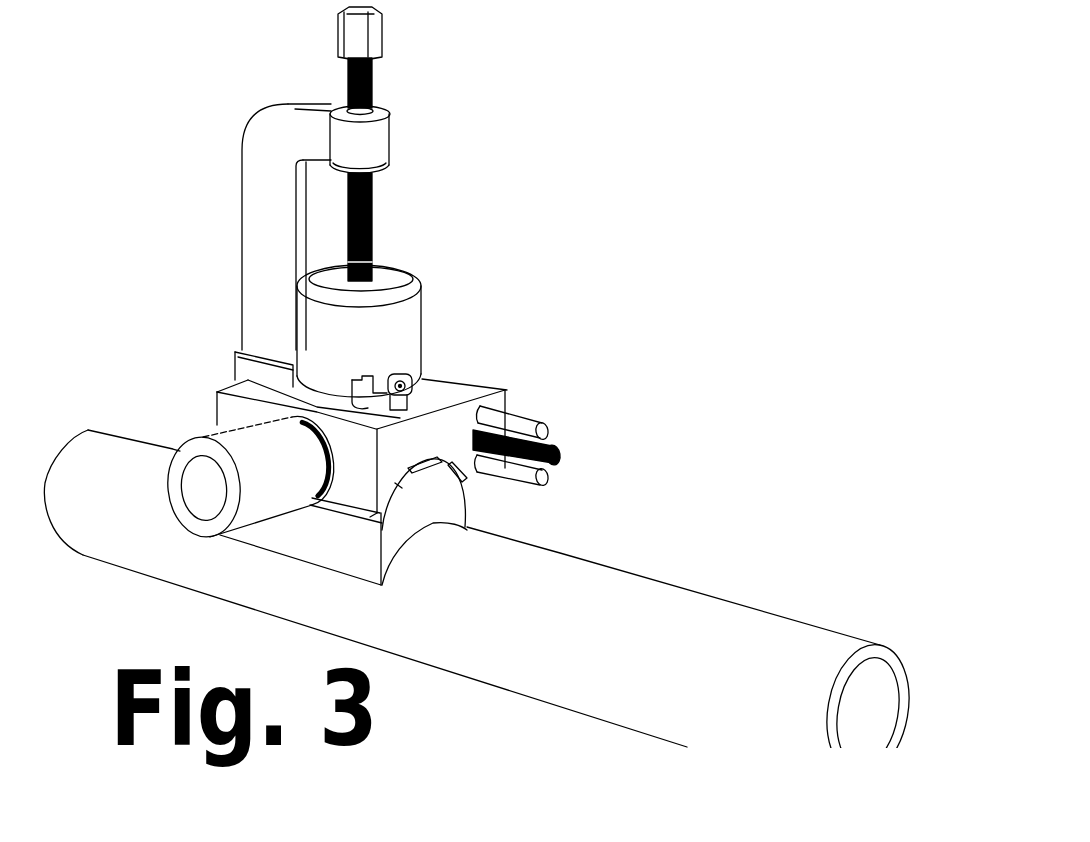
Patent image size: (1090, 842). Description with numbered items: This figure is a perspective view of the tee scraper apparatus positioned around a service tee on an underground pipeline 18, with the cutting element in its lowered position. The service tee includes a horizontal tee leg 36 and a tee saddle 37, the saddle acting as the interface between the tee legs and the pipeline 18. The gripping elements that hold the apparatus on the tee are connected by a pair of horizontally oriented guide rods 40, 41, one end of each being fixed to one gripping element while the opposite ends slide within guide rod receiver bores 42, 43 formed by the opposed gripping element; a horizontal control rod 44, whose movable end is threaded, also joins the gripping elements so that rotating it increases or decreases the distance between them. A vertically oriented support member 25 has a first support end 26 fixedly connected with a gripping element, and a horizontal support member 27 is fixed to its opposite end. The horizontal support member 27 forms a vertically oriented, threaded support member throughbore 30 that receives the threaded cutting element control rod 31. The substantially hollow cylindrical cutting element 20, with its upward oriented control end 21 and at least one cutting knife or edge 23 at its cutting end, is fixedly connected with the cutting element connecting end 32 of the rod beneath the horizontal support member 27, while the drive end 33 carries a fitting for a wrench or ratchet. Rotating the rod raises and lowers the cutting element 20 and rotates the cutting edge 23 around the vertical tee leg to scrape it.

The pipeline 18 is at (90, 432).
The hollow cylindrical cutting element 20 is at (398, 326).
The control end 21 is at (410, 276).
The cutting knife or edge 23 is at (428, 378).
The vertically oriented support member 25 is at (249, 194).
The first support end 26 is at (347, 423).
The horizontal support member 27 is at (318, 102).
The support member throughbore 30 is at (387, 103).
The threaded cutting element control rod 31 is at (406, 169).
The cutting element connecting end 32 is at (378, 265).
The drive end 33 is at (383, 60).
The horizontal tee leg 36 is at (188, 440).
The tee saddle 37 is at (362, 554).
The guide rod 40 is at (535, 415).
The guide rod 41 is at (543, 487).
The guide rod receiver bore 42 is at (492, 392).
The guide rod receiver bore 43 is at (467, 480).
The horizontal control rod 44 is at (560, 450).